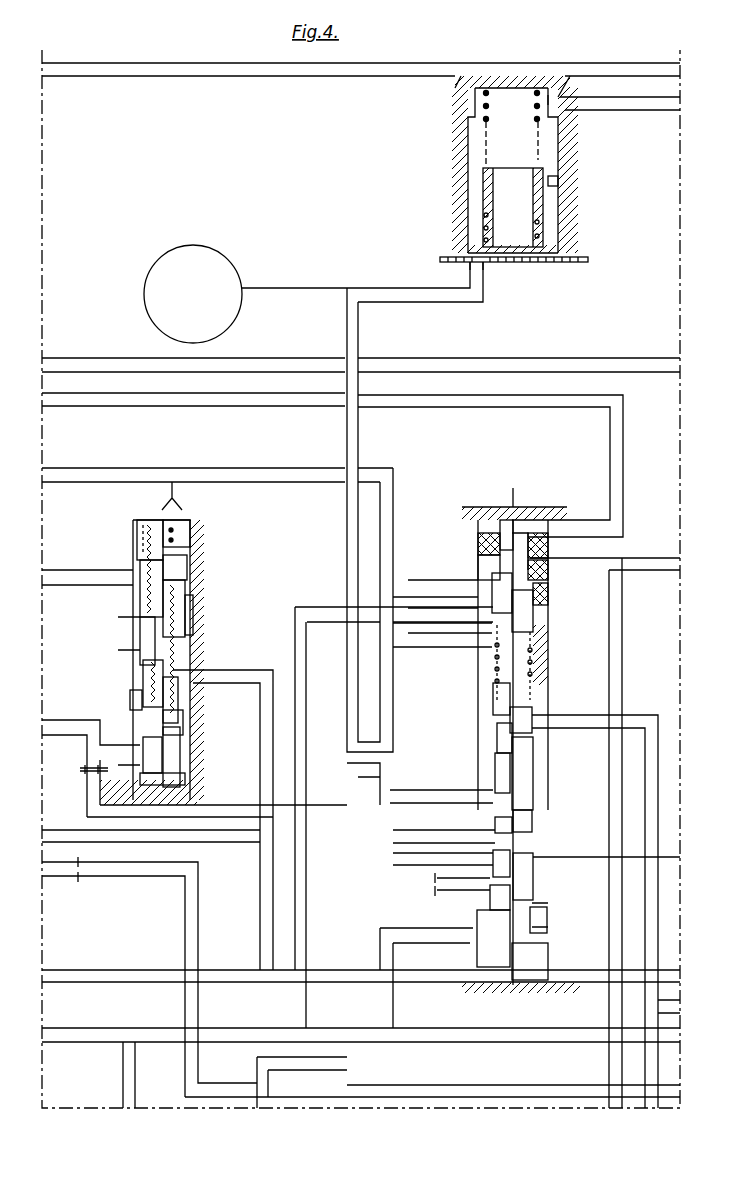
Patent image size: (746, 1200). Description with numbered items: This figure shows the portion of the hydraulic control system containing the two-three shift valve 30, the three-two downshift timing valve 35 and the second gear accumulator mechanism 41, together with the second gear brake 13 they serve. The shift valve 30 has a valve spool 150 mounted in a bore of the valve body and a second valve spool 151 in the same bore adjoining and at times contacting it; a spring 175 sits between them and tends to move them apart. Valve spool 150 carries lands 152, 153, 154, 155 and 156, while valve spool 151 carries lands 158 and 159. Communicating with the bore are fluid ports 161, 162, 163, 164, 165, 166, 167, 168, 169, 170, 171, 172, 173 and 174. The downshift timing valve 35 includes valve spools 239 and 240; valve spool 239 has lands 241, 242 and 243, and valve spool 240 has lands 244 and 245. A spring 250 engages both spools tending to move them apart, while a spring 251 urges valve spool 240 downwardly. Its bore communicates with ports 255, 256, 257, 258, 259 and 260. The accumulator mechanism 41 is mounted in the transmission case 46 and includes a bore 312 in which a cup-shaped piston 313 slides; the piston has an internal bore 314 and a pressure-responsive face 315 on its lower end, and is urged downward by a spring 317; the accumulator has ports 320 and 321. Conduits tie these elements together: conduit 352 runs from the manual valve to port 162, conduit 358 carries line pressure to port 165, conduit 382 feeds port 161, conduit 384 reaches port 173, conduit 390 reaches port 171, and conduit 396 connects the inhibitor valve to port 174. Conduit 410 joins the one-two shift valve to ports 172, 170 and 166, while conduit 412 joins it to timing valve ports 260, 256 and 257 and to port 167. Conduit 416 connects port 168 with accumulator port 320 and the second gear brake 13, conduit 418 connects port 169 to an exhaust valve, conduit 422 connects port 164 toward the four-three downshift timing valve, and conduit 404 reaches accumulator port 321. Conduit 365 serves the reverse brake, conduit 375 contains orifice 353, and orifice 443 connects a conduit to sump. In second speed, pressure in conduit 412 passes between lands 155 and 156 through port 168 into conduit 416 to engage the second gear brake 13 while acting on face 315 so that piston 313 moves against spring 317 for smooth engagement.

The second gear brake 13 is at (197, 287).
The 2-3 shift valve 30 is at (582, 507).
The 3-2 downshift timing valve 35 is at (198, 624).
The second gear accumulator mechanism 41 is at (459, 180).
The transmission case 46 is at (575, 218).
The valve spool 150 is at (555, 690).
The second valve spool 151 is at (550, 582).
The land 152 is at (480, 952).
The land 153 is at (535, 900).
The land 154 is at (535, 845).
The land 155 is at (535, 790).
The land 156 is at (535, 748).
The land 158 is at (535, 615).
The land 159 is at (550, 546).
The fluid port 161 is at (478, 975).
The fluid port 162 is at (558, 934).
The fluid port 163 is at (540, 890).
The fluid port 164 is at (490, 862).
The fluid port 165 is at (540, 833).
The fluid port 166 is at (470, 805).
The fluid port 167 is at (415, 805).
The fluid port 168 is at (490, 740).
The fluid port 169 is at (490, 710).
The fluid port 170 is at (490, 655).
The fluid port 171 is at (480, 615).
The fluid port 172 is at (480, 580).
The fluid port 173 is at (478, 548).
The fluid port 174 is at (472, 530).
The spring 175 is at (545, 650).
The valve spool 239 is at (182, 697).
The valve spool 240 is at (128, 533).
The land 241 is at (182, 768).
The land 242 is at (140, 690).
The land 243 is at (137, 652).
The land 244 is at (190, 605).
The land 245 is at (137, 545).
The spring 250 is at (186, 720).
The spring 251 is at (182, 530).
The port 255 is at (188, 787).
The port 256 is at (185, 745).
The port 257 is at (133, 712).
The port 258 is at (193, 652).
The port 259 is at (190, 625).
The port 260 is at (137, 590).
The bore 312 is at (462, 146).
The piston 313 is at (475, 215).
The internal bore 314 is at (560, 180).
The pressure-responsive face 315 is at (552, 262).
The spring 317 is at (545, 147).
The port 320 is at (476, 264).
The port 321 is at (560, 115).
The conduit 352 is at (397, 930).
The orifice 353 is at (75, 878).
The conduit 358 is at (190, 76).
The conduit 365 is at (135, 360).
The conduit 375 is at (155, 868).
The conduit 382 is at (262, 665).
The conduit 384 is at (658, 558).
The conduit 390 is at (340, 607).
The conduit 396 is at (145, 402).
The conduit 404 is at (660, 104).
The conduit 410 is at (128, 472).
The conduit 412 is at (57, 568).
The conduit 416 is at (320, 290).
The conduit 418 is at (645, 712).
The conduit 422 is at (670, 860).
The orifice 443 is at (90, 775).